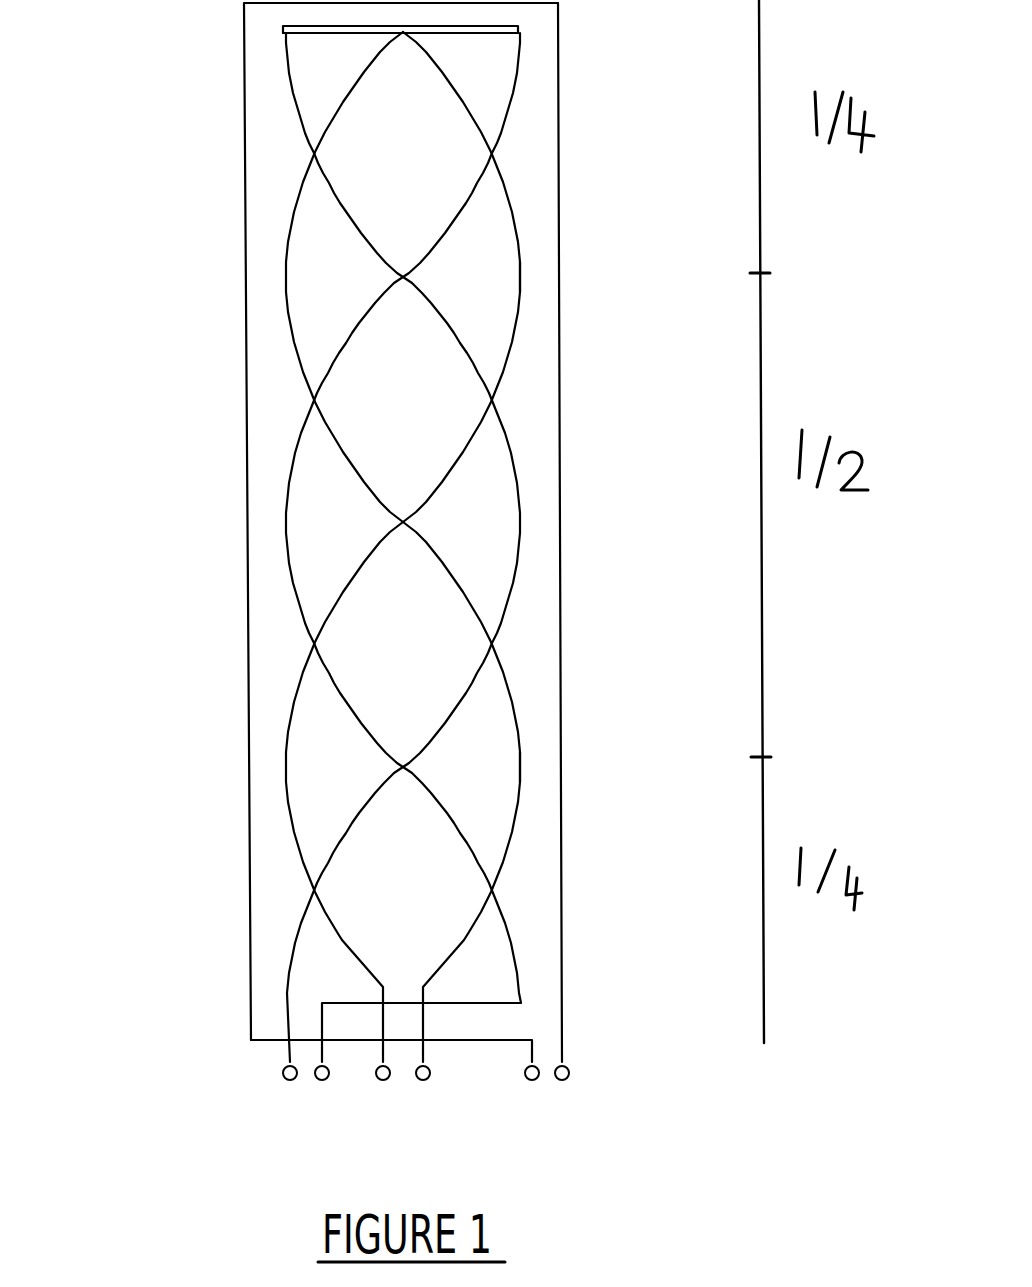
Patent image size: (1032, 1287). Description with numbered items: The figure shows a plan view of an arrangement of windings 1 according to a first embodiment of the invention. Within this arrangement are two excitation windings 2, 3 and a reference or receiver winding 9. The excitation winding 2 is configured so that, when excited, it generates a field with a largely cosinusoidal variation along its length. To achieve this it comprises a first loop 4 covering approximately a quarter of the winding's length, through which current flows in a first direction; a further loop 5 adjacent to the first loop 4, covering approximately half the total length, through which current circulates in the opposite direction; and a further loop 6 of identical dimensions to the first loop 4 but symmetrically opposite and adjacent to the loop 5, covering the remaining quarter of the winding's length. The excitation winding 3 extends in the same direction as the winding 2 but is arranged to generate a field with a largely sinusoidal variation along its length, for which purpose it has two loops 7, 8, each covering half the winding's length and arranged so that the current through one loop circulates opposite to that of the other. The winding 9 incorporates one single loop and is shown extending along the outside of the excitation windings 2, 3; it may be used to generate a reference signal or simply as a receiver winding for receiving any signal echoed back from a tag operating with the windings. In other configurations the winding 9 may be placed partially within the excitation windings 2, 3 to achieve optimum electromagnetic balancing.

The arrangement of windings 1 is at (162, 155).
The excitation winding 2 is at (297, 945).
The excitation winding 3 is at (457, 950).
The first loop 4 is at (327, 587).
The further loop 5 is at (318, 515).
The further loop 6 is at (310, 70).
The loop 7 is at (493, 757).
The loop 8 is at (499, 287).
The reference or receiver winding 9 is at (558, 217).